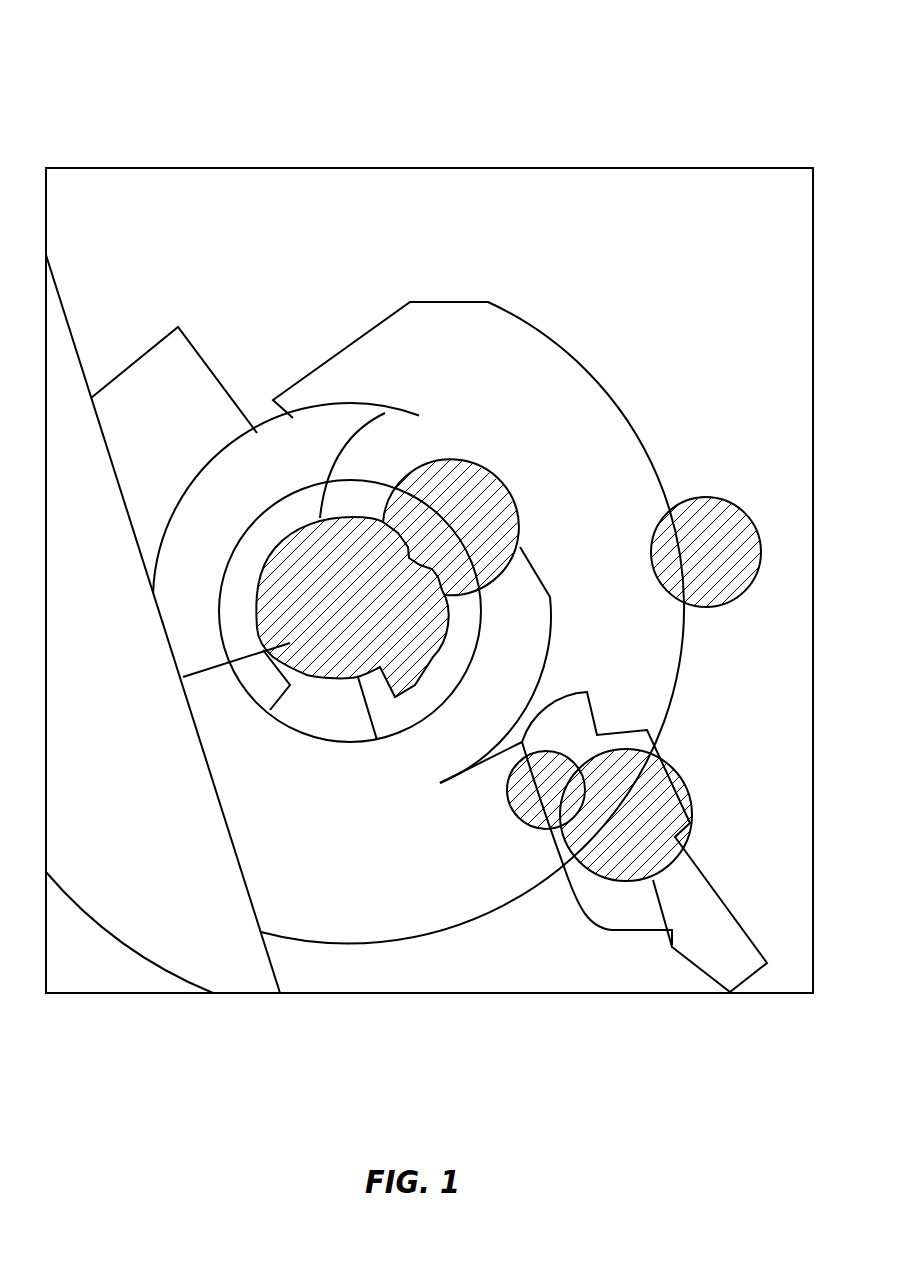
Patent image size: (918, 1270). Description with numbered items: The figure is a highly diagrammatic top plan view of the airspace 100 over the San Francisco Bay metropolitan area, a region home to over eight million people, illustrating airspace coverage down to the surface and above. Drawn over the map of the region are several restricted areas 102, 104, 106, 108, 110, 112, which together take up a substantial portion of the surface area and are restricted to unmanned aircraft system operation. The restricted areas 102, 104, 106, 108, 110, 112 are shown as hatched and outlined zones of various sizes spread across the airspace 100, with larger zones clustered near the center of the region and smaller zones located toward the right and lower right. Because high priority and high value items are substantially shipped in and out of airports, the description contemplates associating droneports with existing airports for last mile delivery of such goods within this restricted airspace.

The airspace 100 is at (77, 49).
The restricted area 102 is at (337, 632).
The restricted area 104 is at (483, 507).
The restricted area 106 is at (520, 602).
The restricted area 108 is at (707, 532).
The restricted area 110 is at (525, 810).
The restricted area 112 is at (620, 848).